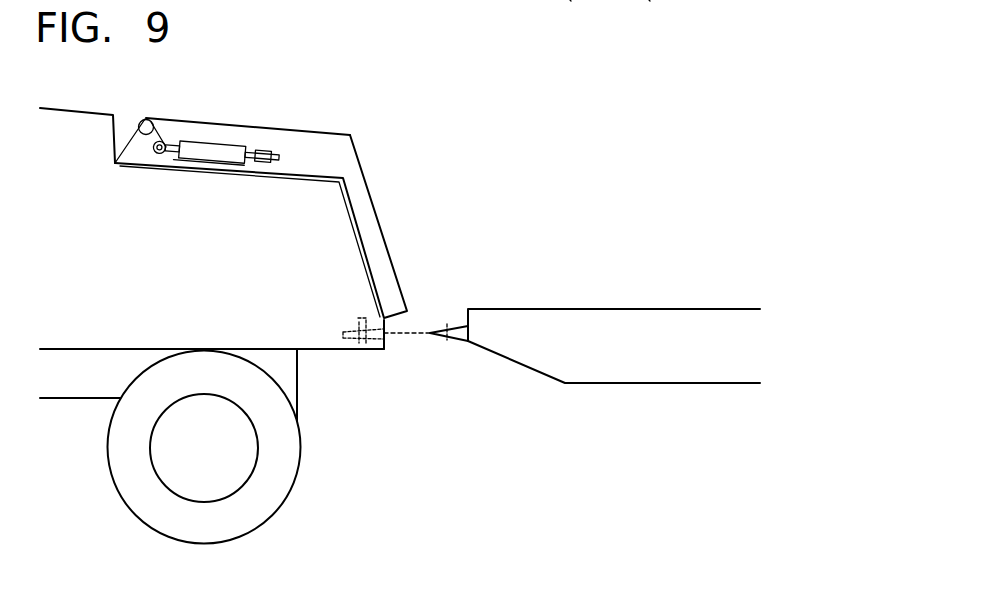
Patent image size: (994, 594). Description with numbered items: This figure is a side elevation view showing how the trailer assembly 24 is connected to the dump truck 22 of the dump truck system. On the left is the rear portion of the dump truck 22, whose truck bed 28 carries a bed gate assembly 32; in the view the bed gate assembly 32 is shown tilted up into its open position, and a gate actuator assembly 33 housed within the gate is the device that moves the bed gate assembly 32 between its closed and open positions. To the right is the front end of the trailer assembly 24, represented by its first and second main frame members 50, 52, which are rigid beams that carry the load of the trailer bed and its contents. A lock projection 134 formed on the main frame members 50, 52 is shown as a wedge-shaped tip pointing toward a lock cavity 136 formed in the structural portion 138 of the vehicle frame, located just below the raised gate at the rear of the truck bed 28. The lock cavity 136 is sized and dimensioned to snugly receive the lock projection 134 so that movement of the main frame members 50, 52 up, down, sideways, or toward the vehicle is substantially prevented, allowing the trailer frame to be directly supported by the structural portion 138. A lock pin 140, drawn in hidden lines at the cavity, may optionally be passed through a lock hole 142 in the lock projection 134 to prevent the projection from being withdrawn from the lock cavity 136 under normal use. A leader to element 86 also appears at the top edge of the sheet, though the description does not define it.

The dump truck 22 is at (385, 175).
The trailer assembly 24 is at (633, 282).
The truck bed 28 is at (302, 177).
The bed gate assembly 32 is at (236, 118).
The gate actuator assembly 33 is at (204, 136).
The first main frame member 50 is at (660, 328).
The second main frame member 52 is at (570, 0).
The trailer component 86 is at (649, 0).
The lock projection 134 is at (447, 327).
The lock cavity 136 is at (372, 335).
The structural portion 138 is at (305, 340).
The lock pin 140 is at (360, 318).
The lock hole 142 is at (447, 323).